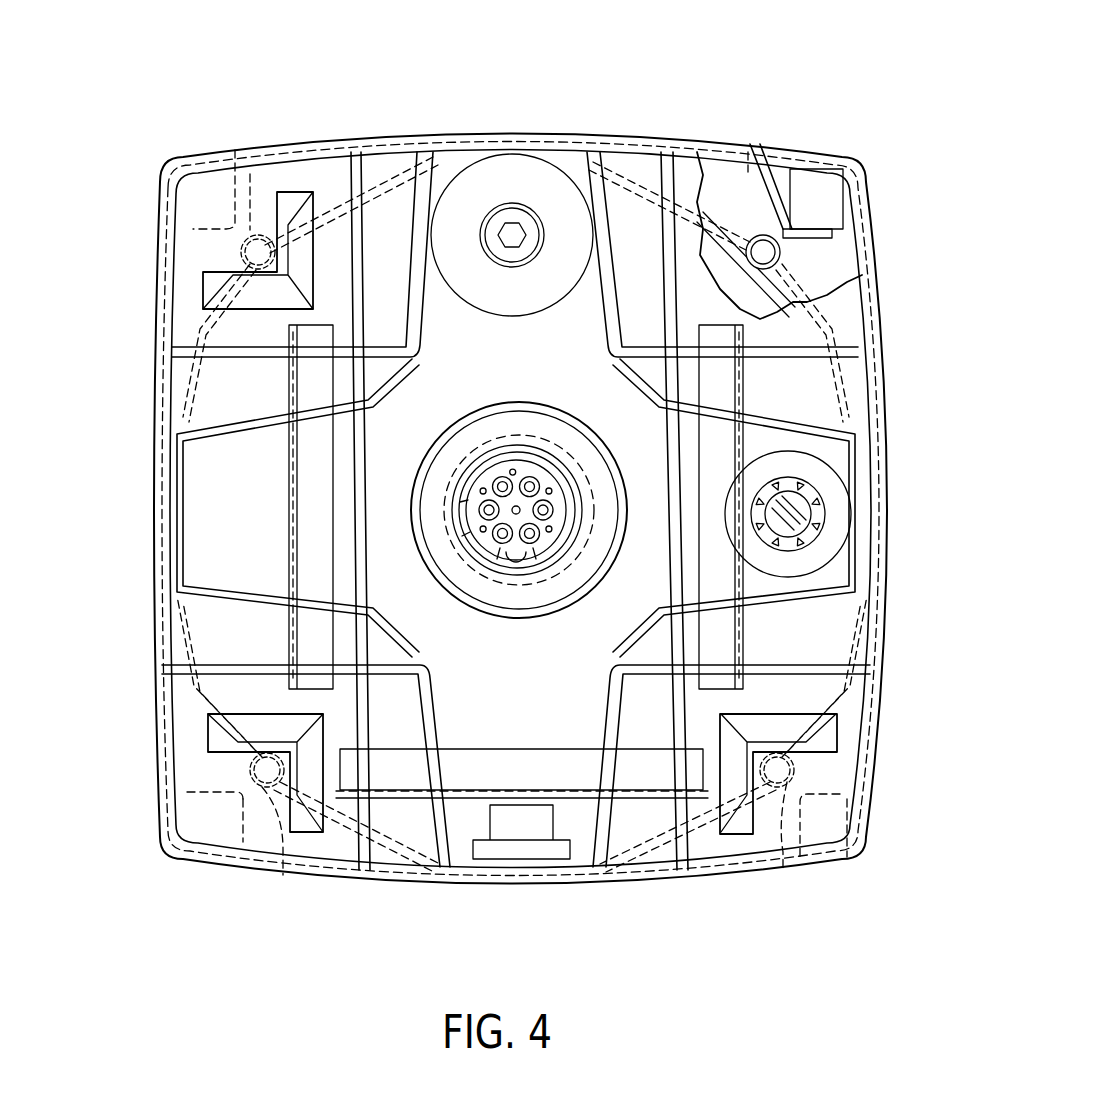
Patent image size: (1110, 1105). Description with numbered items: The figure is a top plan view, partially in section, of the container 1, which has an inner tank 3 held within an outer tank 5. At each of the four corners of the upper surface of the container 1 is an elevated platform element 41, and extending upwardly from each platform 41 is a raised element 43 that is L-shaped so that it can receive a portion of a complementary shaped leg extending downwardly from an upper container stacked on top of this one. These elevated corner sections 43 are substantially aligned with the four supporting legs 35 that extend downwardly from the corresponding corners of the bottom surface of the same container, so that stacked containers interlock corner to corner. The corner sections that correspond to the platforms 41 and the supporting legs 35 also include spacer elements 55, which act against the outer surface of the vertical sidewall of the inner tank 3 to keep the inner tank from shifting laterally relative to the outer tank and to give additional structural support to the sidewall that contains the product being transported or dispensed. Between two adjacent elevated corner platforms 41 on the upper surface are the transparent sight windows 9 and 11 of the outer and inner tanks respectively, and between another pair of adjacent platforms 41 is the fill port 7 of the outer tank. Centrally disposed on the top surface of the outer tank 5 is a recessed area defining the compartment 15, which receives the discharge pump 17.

The container 1 is at (658, 82).
The inner tank 3 is at (818, 276).
The outer tank 5 is at (868, 446).
The fill port 7 is at (518, 203).
The transparent sight window 9 is at (838, 550).
The transparent sight window 11 is at (826, 520).
The compartment 15 is at (519, 494).
The discharge pump 17 is at (515, 468).
The supporting leg 35 is at (196, 213).
The elevated platform element 41 is at (222, 262).
The raised element 43 is at (276, 300).
The spacer element 55 is at (235, 148).